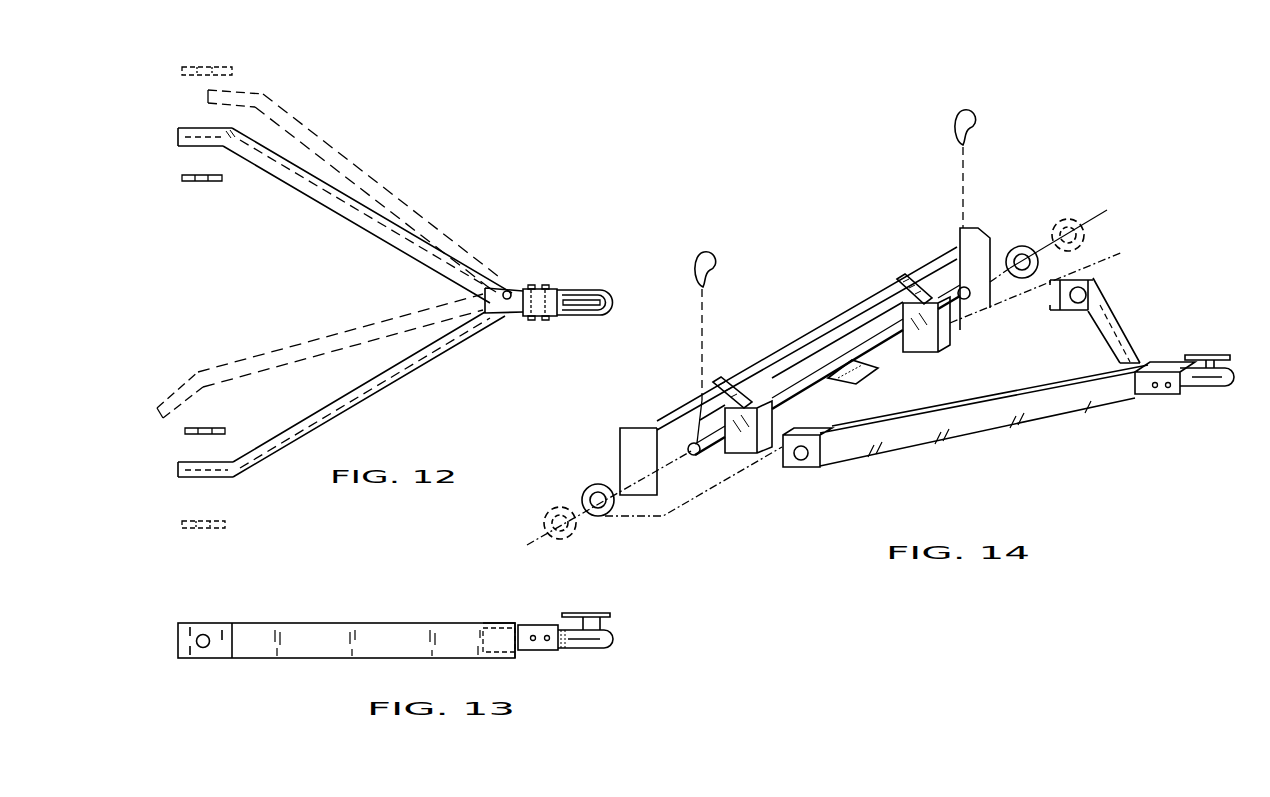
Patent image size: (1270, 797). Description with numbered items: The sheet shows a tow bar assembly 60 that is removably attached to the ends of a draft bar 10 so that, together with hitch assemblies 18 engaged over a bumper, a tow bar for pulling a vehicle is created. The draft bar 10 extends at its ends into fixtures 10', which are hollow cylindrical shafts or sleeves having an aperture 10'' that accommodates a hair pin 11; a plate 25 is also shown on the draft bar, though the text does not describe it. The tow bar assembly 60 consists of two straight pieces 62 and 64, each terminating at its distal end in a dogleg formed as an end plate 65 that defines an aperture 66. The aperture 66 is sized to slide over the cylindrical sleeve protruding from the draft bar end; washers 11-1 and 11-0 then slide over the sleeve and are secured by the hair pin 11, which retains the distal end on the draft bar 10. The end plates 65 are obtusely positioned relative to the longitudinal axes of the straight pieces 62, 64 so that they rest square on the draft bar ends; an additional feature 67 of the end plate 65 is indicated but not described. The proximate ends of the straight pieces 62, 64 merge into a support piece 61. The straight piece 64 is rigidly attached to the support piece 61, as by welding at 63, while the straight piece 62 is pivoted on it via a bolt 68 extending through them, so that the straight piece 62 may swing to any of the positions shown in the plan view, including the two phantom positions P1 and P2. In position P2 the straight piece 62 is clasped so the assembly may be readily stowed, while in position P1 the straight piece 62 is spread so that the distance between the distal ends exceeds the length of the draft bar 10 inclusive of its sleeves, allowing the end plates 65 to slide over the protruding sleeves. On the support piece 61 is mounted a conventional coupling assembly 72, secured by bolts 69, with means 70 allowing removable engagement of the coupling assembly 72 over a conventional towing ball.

In FIG. 14, the telescoping frame tube 10 is at (807, 338).
In FIG. 14, the fixture 10' is at (829, 372).
In FIG. 14, the aperture 10'' is at (781, 415).
In FIG. 14, the hair pin 11 is at (976, 128).
In FIG. 12, the washer 11-0 is at (233, 70).
In FIG. 14, the washer 11-0 is at (1086, 230).
In FIG. 12, the washer 11-1 is at (218, 182).
In FIG. 14, the washer 11-1 is at (1040, 262).
In FIG. 14, the hitch assembly 18 is at (950, 347).
In FIG. 14, the mounting plate 25 is at (990, 228).
In FIG. 12, the tow bar assembly 60 is at (366, 229).
In FIG. 13, the tow bar assembly 60 is at (507, 619).
In FIG. 14, the tow bar assembly 60 is at (1138, 339).
In FIG. 13, the support piece 61 is at (563, 651).
In FIG. 14, the support piece 61 is at (1150, 396).
In FIG. 12, the straight piece 62 is at (324, 200).
In FIG. 14, the straight piece 62 is at (1115, 312).
In FIG. 13, the weld 63 is at (516, 656).
In FIG. 12, the straight piece 64 is at (418, 368).
In FIG. 13, the straight piece 64 is at (384, 630).
In FIG. 14, the straight piece 64 is at (1000, 428).
In FIG. 12, the end plate 65 is at (178, 137).
In FIG. 13, the end plate 65 is at (177, 652).
In FIG. 12, the aperture 66 is at (573, 289).
In FIG. 12, the pin 67 is at (204, 127).
In FIG. 13, the pin 67 is at (195, 641).
In FIG. 12, the bolt 68 is at (510, 286).
In FIG. 12, the bolts 69 is at (544, 322).
In FIG. 13, the bolts 69 is at (547, 641).
In FIG. 14, the bolts 69 is at (1168, 388).
In FIG. 12, the engagement means 70 is at (590, 312).
In FIG. 13, the engagement means 70 is at (583, 614).
In FIG. 14, the engagement means 70 is at (1208, 355).
In FIG. 12, the coupling assembly 72 is at (602, 290).
In FIG. 13, the coupling assembly 72 is at (610, 636).
In FIG. 14, the coupling assembly 72 is at (1218, 392).
In FIG. 12, the phantom position P1 is at (405, 203).
In FIG. 12, the phantom position P2 is at (273, 351).